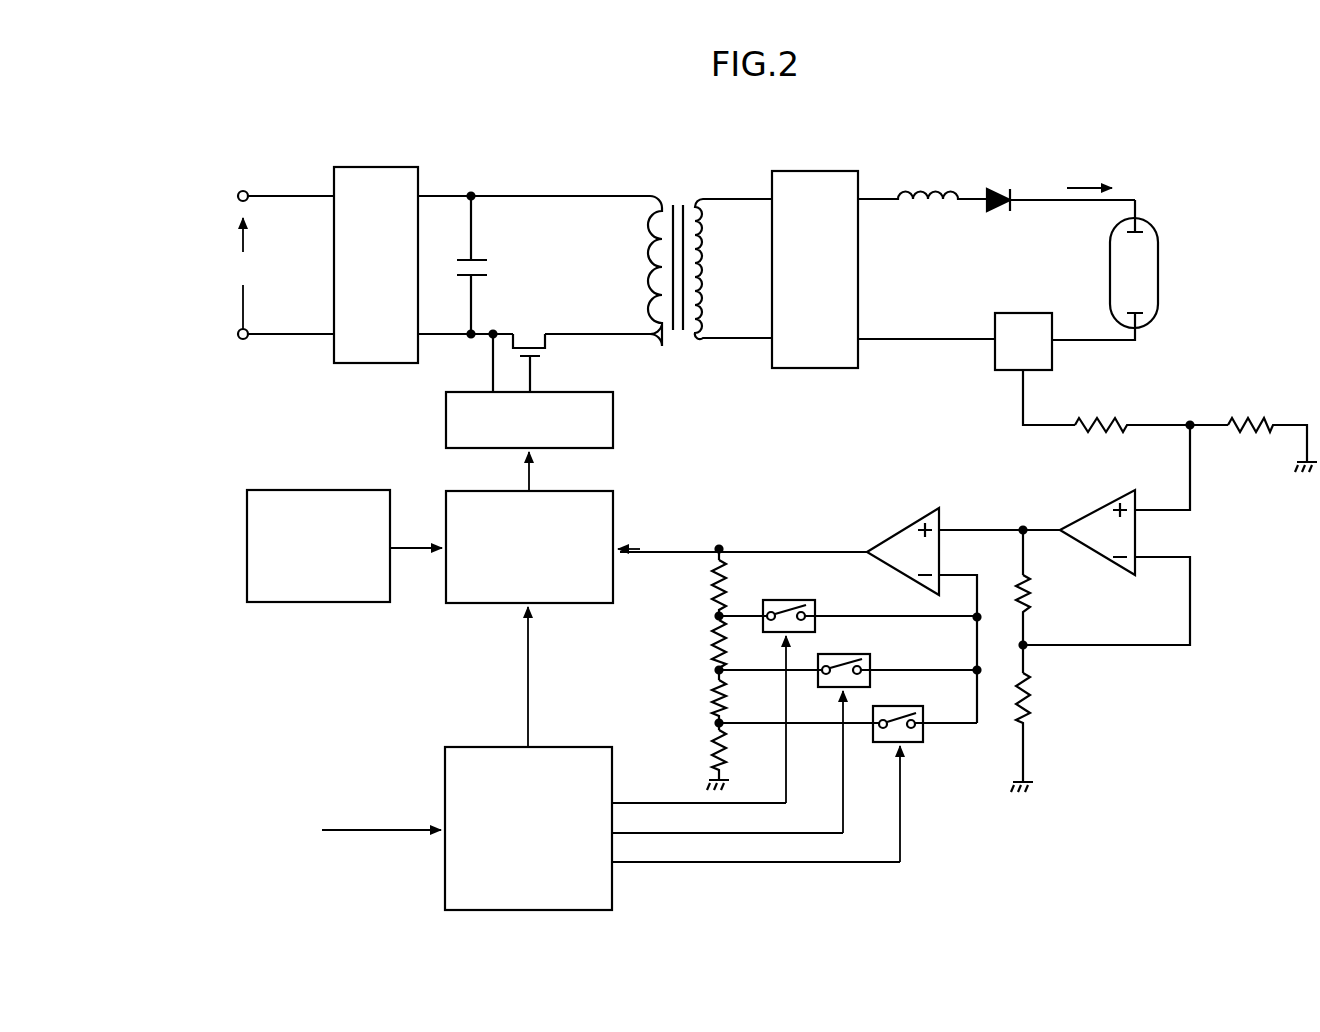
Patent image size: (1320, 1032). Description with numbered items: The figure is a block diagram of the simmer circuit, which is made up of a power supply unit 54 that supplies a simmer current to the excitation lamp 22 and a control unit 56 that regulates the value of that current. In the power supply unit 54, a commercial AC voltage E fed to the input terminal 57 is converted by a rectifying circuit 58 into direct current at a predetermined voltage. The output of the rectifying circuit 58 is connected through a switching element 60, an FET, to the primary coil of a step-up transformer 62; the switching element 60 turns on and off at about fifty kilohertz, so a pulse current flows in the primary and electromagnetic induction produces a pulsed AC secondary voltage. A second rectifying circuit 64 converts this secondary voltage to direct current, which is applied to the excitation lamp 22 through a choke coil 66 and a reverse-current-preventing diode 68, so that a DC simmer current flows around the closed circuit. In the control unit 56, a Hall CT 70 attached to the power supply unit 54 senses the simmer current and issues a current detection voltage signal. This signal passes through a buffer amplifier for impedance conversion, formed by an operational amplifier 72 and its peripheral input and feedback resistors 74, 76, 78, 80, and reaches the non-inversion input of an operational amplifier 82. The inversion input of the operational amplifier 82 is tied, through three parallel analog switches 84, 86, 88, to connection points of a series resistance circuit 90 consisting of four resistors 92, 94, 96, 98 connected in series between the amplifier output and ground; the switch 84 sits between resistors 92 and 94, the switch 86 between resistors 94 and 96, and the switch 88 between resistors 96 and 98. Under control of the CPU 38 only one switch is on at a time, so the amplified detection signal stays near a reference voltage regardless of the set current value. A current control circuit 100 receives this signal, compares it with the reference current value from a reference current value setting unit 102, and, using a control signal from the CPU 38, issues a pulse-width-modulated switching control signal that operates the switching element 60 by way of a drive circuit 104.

The excitation lamp 22 is at (1162, 248).
The CPU 38 is at (445, 770).
The power supply unit 54 is at (578, 158).
The control unit 56 is at (963, 826).
The input terminal 57 is at (248, 180).
The rectifying circuit 58 is at (375, 167).
The switching element 60 is at (531, 333).
The step-up transformer 62 is at (679, 196).
The rectifying circuit 64 is at (811, 171).
The choke coil 66 is at (931, 188).
The diode 68 is at (1003, 188).
The Hall CT 70 is at (992, 358).
The operational amplifier 72 is at (1090, 513).
The resistor 74 is at (1118, 422).
The resistor 76 is at (1250, 422).
The resistor 78 is at (1036, 596).
The resistor 80 is at (1040, 698).
The operational amplifier 82 is at (905, 520).
The analog switch 84 is at (913, 708).
The analog switch 86 is at (864, 654).
The analog switch 88 is at (790, 600).
The series resistance circuit 90 is at (658, 630).
The resistor 92 is at (708, 753).
The resistor 94 is at (708, 695).
The resistor 96 is at (708, 650).
The resistor 98 is at (708, 586).
The current control circuit 100 is at (613, 512).
The reference current value setting unit 102 is at (291, 487).
The drive circuit 104 is at (613, 412).